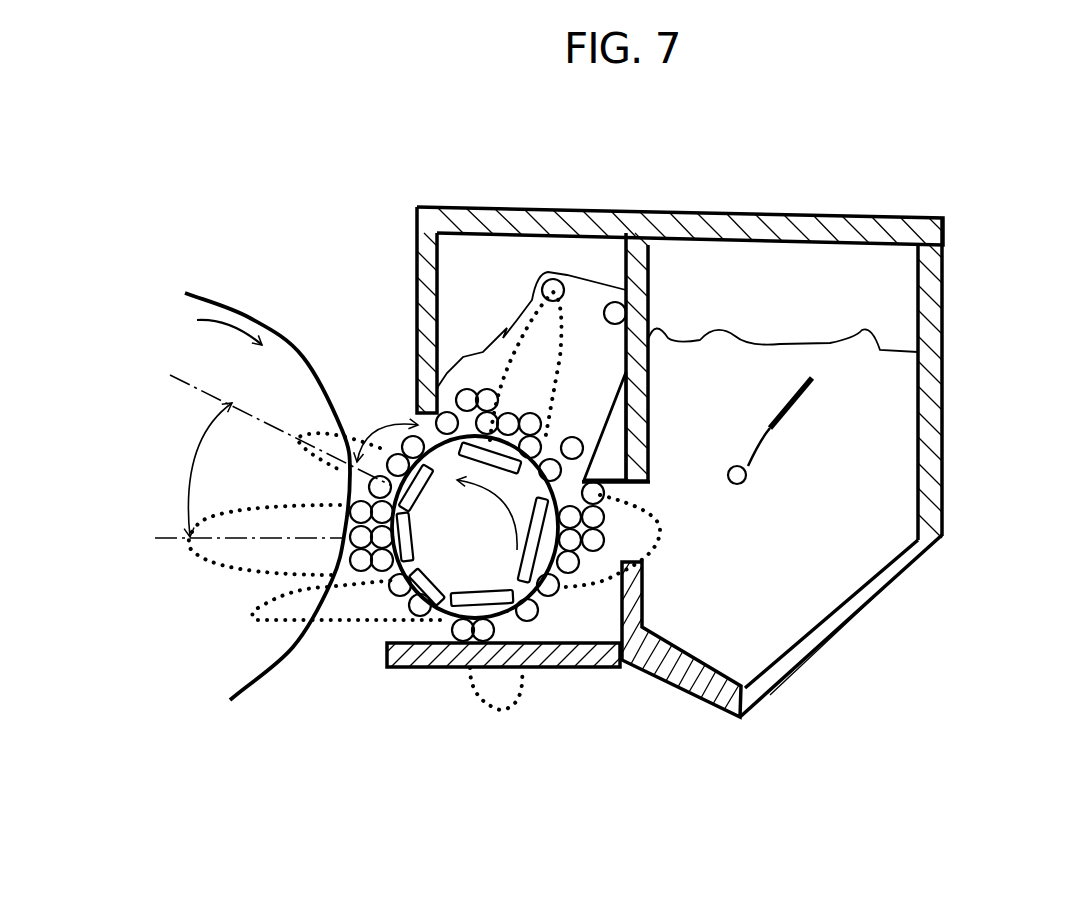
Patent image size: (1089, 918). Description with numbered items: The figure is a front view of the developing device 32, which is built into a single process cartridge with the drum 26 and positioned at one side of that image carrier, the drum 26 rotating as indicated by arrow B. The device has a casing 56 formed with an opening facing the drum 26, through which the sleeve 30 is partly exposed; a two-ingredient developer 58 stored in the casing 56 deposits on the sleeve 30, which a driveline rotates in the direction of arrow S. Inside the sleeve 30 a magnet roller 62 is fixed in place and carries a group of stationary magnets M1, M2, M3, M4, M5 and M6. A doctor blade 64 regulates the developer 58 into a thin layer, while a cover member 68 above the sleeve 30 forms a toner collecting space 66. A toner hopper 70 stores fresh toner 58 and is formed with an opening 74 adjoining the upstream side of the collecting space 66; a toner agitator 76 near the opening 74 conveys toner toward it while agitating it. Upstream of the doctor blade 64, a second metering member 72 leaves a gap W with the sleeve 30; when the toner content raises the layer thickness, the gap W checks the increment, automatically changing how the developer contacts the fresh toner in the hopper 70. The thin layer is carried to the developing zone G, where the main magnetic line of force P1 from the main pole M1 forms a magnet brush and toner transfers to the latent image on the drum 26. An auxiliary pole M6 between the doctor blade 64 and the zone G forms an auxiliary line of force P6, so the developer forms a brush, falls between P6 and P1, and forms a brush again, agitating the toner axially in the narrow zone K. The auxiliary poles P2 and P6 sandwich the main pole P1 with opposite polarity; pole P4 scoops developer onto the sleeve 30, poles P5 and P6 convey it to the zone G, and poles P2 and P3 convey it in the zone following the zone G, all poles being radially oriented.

The drum 26 is at (247, 690).
The sleeve 30 is at (512, 548).
The developing device 32 is at (975, 218).
The casing 56 is at (855, 615).
The developer 58 is at (833, 521).
The magnet roller 62 is at (540, 640).
The doctor blade 64 is at (410, 395).
The toner collecting space 66 is at (417, 262).
The cover member 68 is at (500, 212).
The toner hopper 70 is at (803, 217).
The second metering member 72 is at (578, 427).
The opening 74 is at (668, 497).
The toner agitator 76 is at (770, 428).
The narrow zone K is at (353, 413).
The drum rotation direction B is at (229, 336).
The direction of rotation of the sleeve S is at (487, 515).
The developing zone G is at (363, 593).
The gap W is at (578, 492).
The main magnetic pole M1 is at (412, 552).
The magnet pole M2 is at (425, 600).
The magnet pole M3 is at (470, 612).
The magnet pole M4 is at (548, 600).
The magnet pole M5 is at (462, 428).
The auxiliary magnetic pole M6 is at (420, 502).
The main magnetic line of force P1 is at (225, 565).
The auxiliary magnetic pole P2 is at (337, 630).
The magnetic pole P3 is at (478, 688).
The magnetic pole P4 is at (683, 535).
The magnetic pole P5 is at (525, 366).
The auxiliary magnetic line of force P6 is at (298, 432).